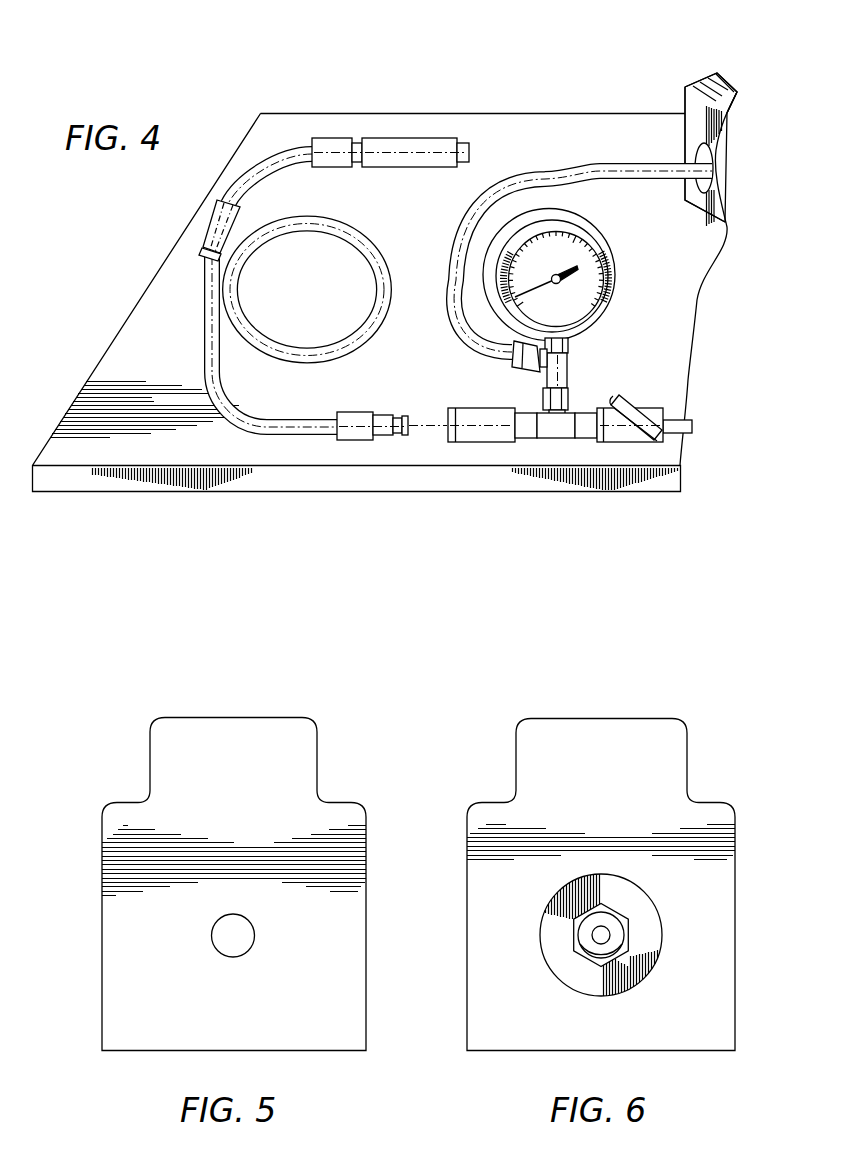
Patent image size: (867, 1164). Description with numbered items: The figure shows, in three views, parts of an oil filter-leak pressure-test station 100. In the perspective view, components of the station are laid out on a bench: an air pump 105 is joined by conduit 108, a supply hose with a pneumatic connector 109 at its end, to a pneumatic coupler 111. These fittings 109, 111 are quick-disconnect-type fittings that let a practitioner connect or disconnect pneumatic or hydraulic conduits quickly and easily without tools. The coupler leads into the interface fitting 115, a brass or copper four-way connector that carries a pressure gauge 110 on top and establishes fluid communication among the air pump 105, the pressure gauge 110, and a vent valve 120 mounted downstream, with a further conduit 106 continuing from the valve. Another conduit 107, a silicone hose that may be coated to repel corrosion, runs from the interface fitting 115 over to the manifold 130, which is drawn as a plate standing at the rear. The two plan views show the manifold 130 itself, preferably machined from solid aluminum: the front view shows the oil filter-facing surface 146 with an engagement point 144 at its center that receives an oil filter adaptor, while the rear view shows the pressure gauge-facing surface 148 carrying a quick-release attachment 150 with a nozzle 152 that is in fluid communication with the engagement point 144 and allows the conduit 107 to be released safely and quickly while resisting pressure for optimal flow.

In FIG. 4, the oil filter-leak pressure-test station 100 is at (385, 279).
In FIG. 4, the air pump 105 is at (378, 138).
In FIG. 4, the conduit 106 is at (677, 420).
In FIG. 4, the conduit 107 is at (552, 168).
In FIG. 4, the conduit 108 is at (263, 428).
In FIG. 4, the pneumatic connector 109 is at (381, 412).
In FIG. 4, the pressure gauge 110 is at (602, 242).
In FIG. 4, the pneumatic coupler 111 is at (482, 431).
In FIG. 4, the interface fitting 115 is at (572, 368).
In FIG. 4, the vent valve 120 is at (613, 435).
In FIG. 4, the manifold 130 is at (707, 79).
In FIG. 5, the manifold 130 is at (120, 821).
In FIG. 6, the manifold 130 is at (494, 811).
In FIG. 5, the engagement point 144 is at (255, 936).
In FIG. 5, the oil filter-facing surface 146 is at (153, 913).
In FIG. 6, the pressure gauge-facing surface 148 is at (674, 882).
In FIG. 6, the quick-release attachment 150 is at (659, 915).
In FIG. 6, the nozzle 152 is at (613, 933).